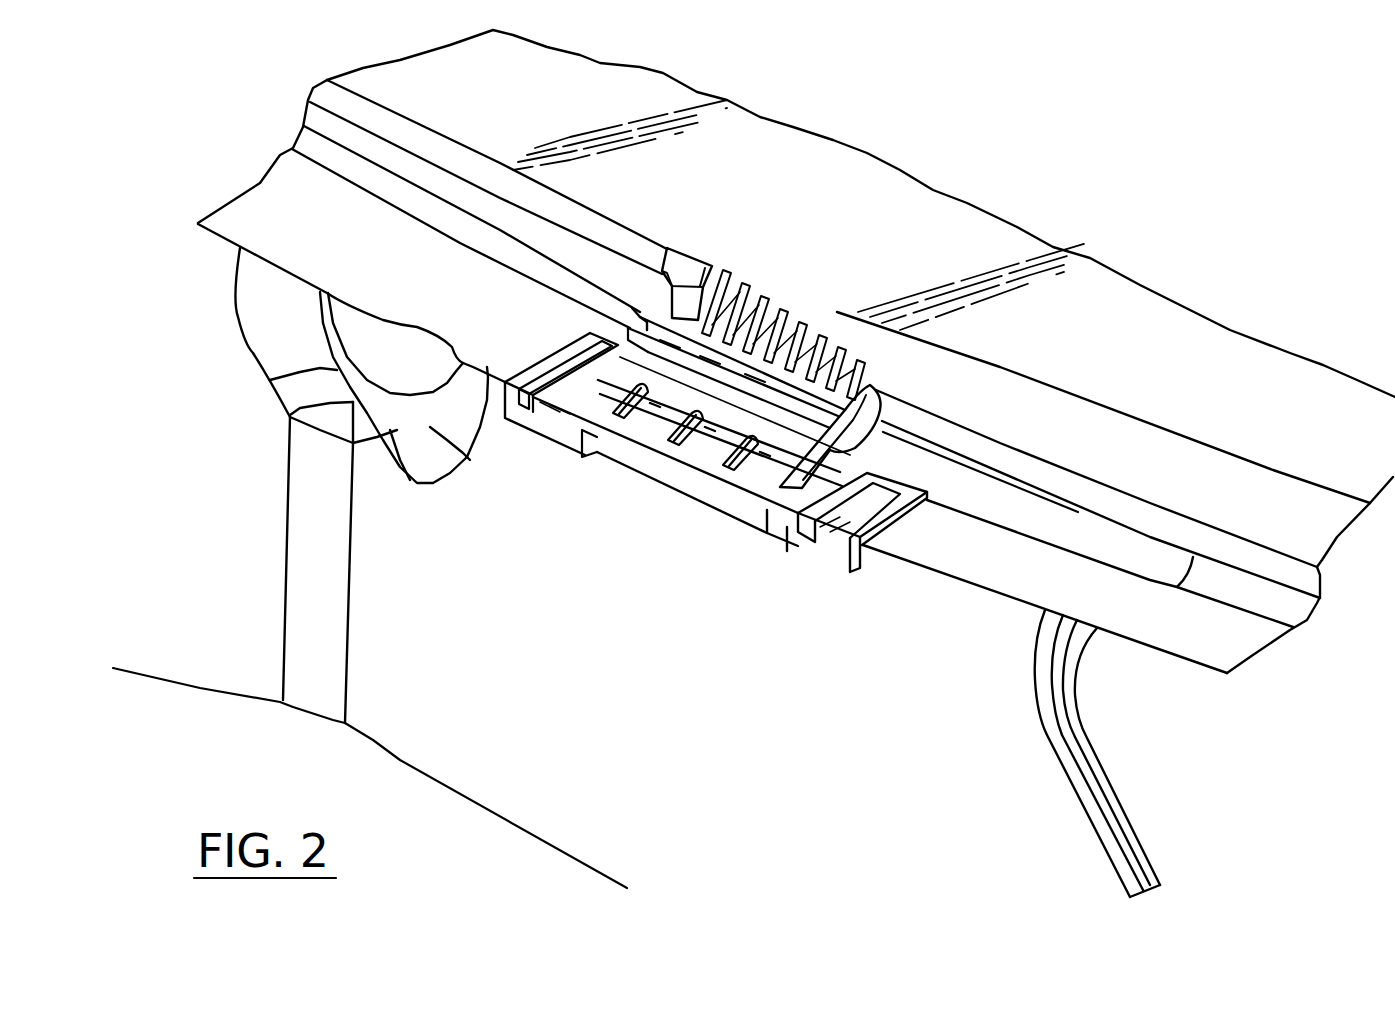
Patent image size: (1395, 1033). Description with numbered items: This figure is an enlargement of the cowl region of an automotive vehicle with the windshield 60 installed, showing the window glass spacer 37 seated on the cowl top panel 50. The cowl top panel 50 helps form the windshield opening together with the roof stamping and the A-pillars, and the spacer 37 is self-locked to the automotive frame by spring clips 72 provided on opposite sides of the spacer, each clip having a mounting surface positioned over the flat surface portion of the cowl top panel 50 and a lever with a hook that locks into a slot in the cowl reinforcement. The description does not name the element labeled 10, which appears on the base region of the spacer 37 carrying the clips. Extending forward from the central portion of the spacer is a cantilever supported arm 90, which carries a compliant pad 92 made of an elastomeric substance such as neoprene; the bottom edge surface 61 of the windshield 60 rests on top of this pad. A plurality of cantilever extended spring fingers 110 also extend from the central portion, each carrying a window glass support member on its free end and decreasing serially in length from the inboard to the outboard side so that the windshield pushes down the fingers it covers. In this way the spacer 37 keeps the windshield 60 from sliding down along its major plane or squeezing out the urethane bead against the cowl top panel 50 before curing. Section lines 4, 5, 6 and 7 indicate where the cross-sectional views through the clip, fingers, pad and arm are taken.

The base plate 10 is at (735, 492).
The window glass spacer 37 is at (846, 298).
The cowl top panel 50 is at (275, 182).
The windshield 60 is at (1053, 247).
The bottom edge surface 61 is at (1142, 428).
The spring clips 72 is at (540, 367).
The cantilever supported arm 90 is at (657, 289).
The compliant pad 92 is at (668, 250).
The spring fingers 110 is at (880, 377).
The section line 4- 4 is at (720, 583).
The section line 5- 5 is at (590, 540).
The section line 6- 6 is at (530, 492).
The section line 7- 7 is at (478, 461).